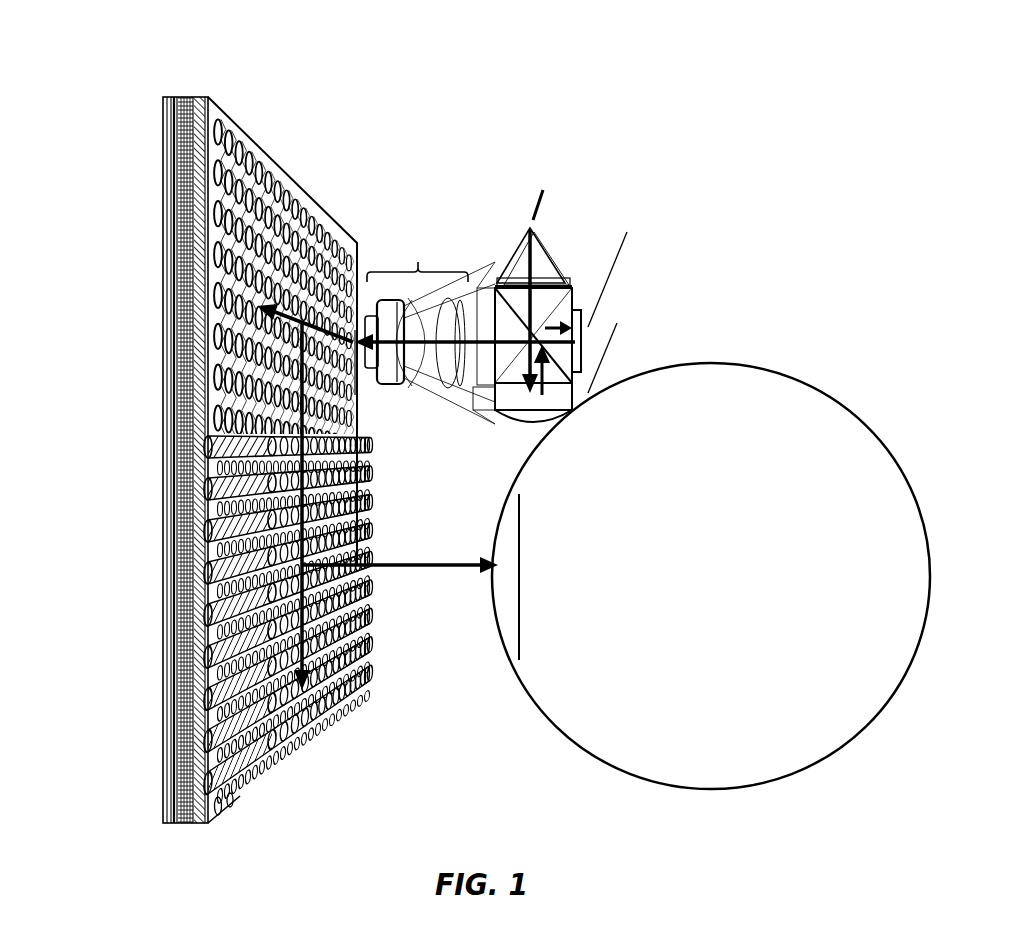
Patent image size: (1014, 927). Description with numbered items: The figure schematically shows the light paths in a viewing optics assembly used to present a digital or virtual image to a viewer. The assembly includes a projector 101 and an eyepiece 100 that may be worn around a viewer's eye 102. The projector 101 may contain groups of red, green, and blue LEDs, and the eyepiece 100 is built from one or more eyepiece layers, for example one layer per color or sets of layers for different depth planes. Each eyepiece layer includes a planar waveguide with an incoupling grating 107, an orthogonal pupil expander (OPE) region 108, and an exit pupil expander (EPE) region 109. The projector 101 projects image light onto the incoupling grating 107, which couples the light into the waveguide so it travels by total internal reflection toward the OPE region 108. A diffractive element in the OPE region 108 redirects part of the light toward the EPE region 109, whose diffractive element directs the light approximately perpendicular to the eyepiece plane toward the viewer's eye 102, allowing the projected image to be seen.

The eyepiece 100 is at (218, 419).
The projector 101 is at (559, 287).
The viewer's eye 102 is at (711, 576).
The incoupling grating 107 is at (360, 375).
The orthogonal pupil expander (OPE) region 108 is at (240, 273).
The exit pupil expander (EPE) region 109 is at (195, 624).